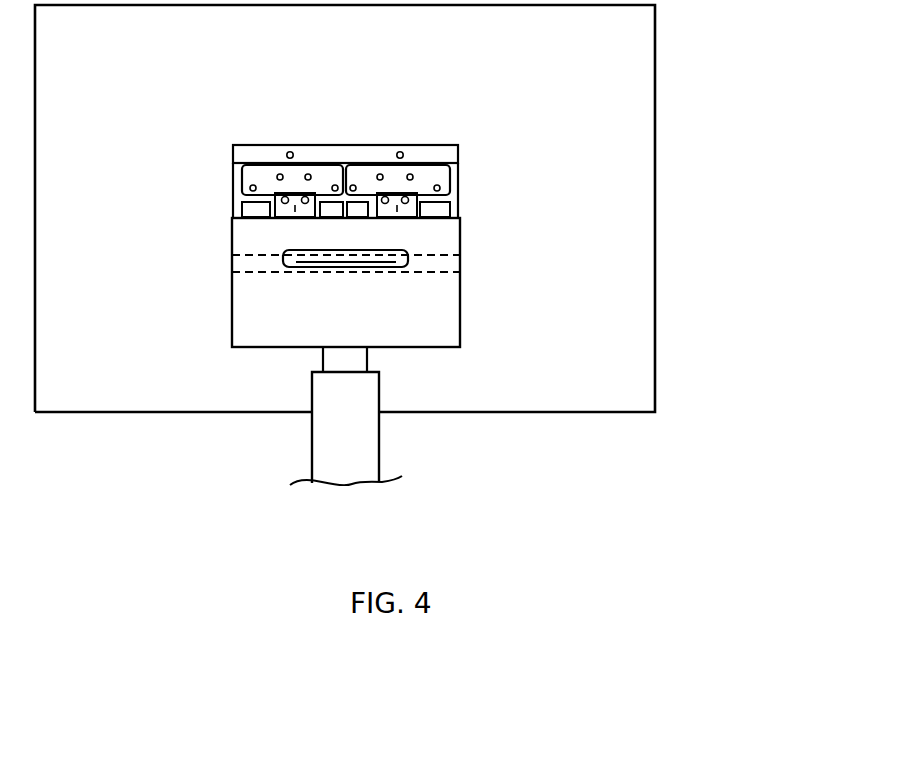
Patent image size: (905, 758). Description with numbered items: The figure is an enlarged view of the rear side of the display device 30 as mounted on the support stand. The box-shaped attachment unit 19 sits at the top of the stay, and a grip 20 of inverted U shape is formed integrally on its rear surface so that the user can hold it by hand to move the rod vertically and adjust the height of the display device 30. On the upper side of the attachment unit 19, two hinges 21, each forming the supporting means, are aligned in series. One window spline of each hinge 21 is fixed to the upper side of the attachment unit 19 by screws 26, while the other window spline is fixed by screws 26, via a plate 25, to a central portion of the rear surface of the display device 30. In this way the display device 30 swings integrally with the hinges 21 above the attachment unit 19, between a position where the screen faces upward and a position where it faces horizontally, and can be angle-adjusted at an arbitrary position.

The display device 30 is at (637, 58).
The attachment unit 19 is at (443, 327).
The grip 20 is at (363, 258).
The plate 25 is at (233, 152).
The hinge 21 is at (230, 207).
The screws 26 is at (381, 174).